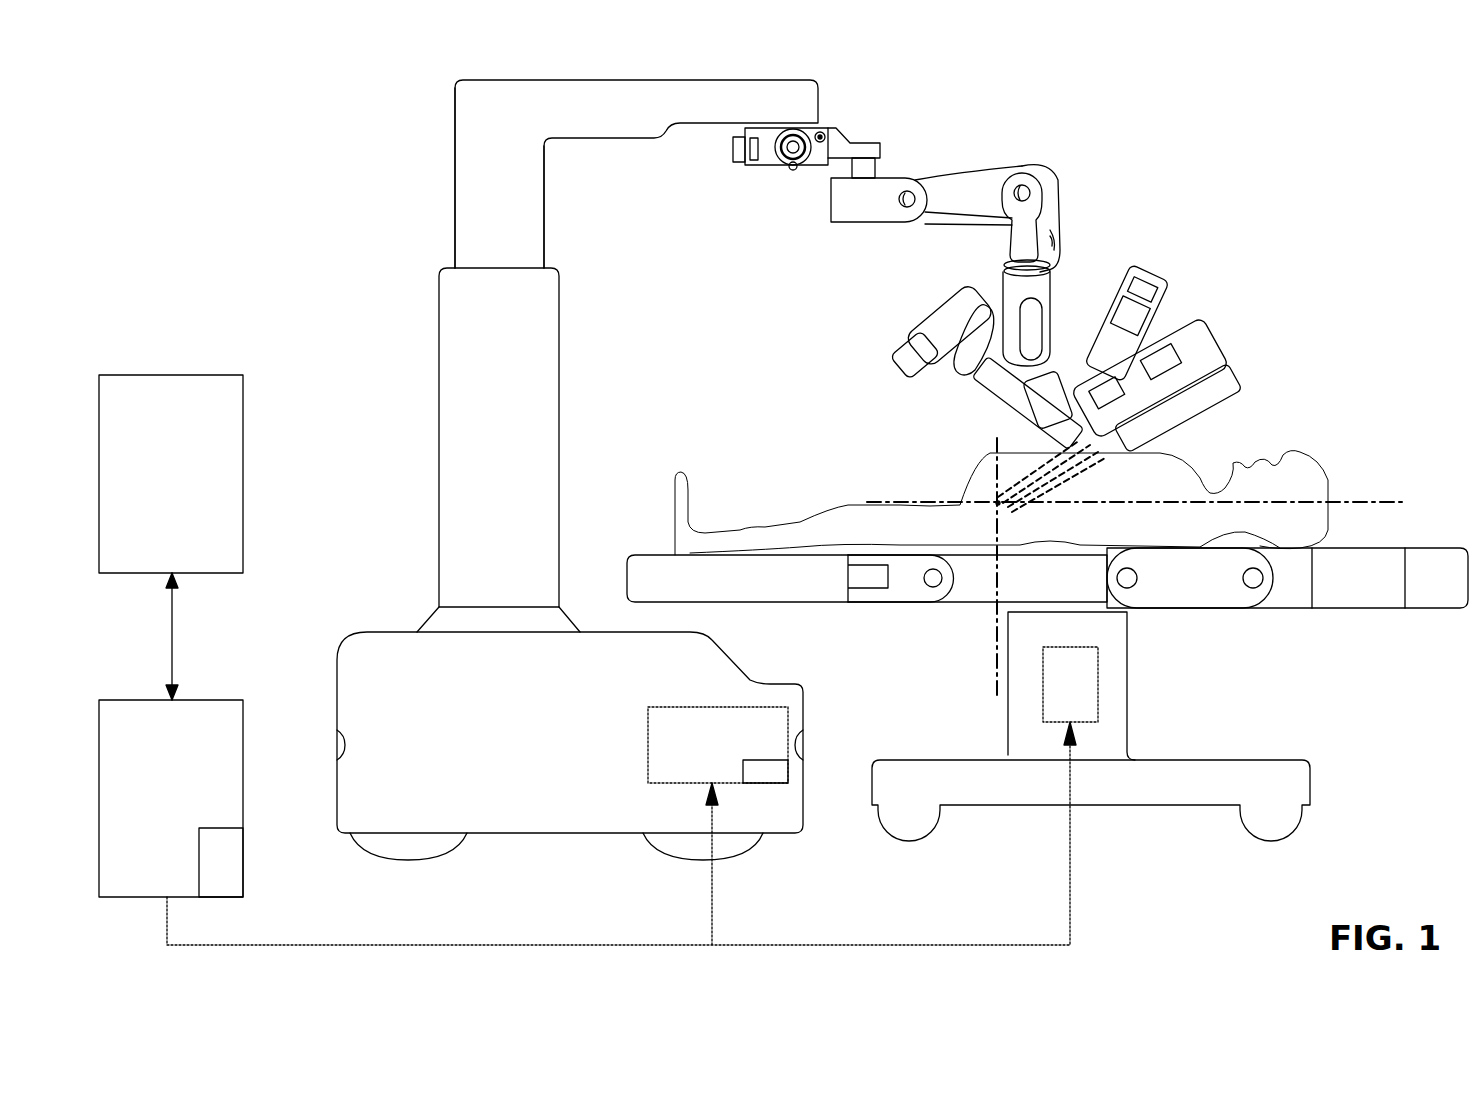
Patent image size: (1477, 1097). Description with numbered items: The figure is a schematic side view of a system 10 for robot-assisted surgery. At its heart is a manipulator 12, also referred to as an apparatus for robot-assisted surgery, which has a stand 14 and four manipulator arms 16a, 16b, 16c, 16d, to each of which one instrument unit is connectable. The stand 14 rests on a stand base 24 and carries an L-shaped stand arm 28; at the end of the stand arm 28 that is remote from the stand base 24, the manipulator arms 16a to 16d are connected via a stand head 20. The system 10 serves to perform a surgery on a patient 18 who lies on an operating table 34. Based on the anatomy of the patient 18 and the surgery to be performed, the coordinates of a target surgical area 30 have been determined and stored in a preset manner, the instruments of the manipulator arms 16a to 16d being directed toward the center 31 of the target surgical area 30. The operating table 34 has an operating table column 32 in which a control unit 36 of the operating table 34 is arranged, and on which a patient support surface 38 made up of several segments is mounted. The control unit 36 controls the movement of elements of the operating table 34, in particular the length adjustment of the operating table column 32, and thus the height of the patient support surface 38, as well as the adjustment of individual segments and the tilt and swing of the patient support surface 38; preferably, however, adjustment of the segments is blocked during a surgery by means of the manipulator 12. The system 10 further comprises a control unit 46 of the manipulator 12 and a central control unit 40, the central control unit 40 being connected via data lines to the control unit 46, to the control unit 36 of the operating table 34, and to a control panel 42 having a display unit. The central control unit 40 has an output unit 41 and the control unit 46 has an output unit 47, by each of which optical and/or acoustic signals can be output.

The system 10 is at (1291, 215).
The manipulator 12 is at (426, 104).
The stand 14 is at (390, 282).
The manipulator arm 16a is at (1045, 415).
The manipulator arm 16b is at (1057, 397).
The manipulator arm 16c is at (1075, 420).
The manipulator arm 16d is at (1083, 372).
The patient 18 is at (1307, 455).
The stand head 20 is at (886, 120).
The stand base 24 is at (362, 665).
The stand arm 28 is at (596, 124).
The target surgical area 30 is at (978, 509).
The center of the target surgical area 31 is at (995, 494).
The operating table column 32 is at (1127, 732).
The operating table 34 is at (1292, 667).
The control unit of the operating table 36 is at (1098, 678).
The patient support surface 38 is at (1440, 547).
The central control unit 40 is at (212, 700).
The output unit 41 is at (230, 858).
The control panel 42 is at (243, 447).
The control unit of the manipulator 46 is at (743, 718).
The output unit 47 is at (763, 777).